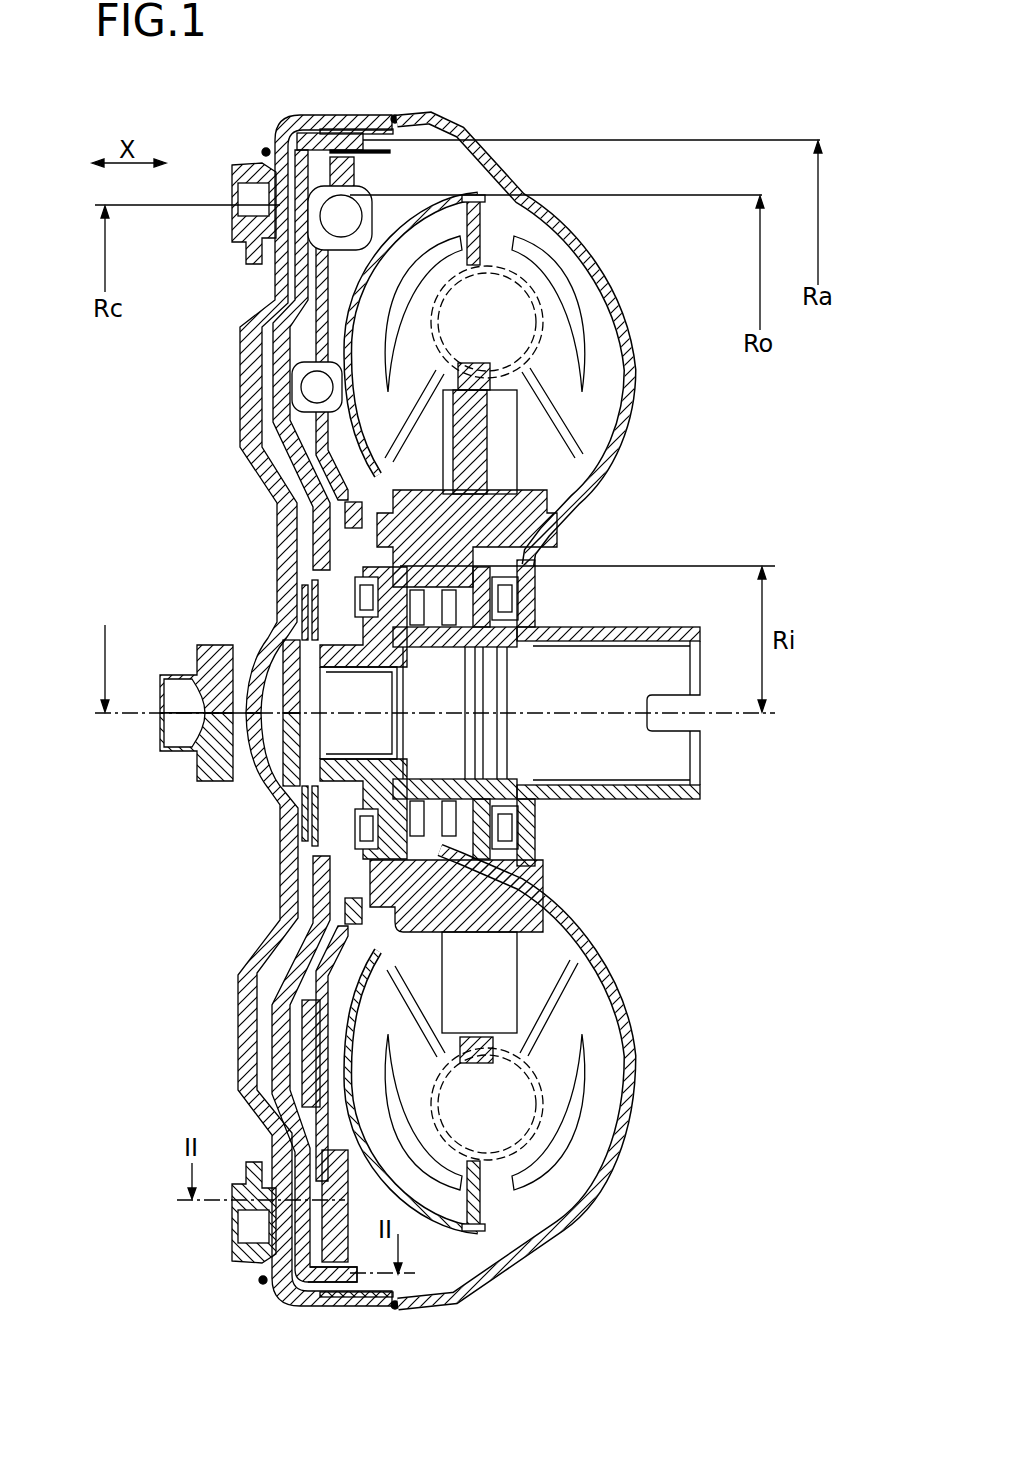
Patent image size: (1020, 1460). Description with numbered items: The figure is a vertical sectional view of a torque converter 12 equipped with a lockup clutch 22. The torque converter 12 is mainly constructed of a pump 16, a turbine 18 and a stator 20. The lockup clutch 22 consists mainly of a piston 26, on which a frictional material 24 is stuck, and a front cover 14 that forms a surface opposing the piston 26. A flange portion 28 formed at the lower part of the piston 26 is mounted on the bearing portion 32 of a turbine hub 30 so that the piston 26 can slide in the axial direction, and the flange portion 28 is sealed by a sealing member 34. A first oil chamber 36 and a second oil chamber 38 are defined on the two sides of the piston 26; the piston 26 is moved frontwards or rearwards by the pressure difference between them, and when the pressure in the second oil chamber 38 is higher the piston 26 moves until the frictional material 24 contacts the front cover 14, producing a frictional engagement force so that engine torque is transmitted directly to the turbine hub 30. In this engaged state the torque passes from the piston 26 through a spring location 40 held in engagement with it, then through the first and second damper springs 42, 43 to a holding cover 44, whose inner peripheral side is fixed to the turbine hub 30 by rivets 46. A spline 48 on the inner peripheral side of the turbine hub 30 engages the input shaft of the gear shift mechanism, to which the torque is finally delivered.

The torque converter 12 is at (430, 701).
The front cover 14 is at (236, 386).
The pump 16 is at (585, 264).
The turbine 18 is at (452, 198).
The stator 20 is at (507, 460).
The lockup clutch 22 is at (333, 701).
The frictional material 24 is at (274, 150).
The piston 26 is at (310, 146).
The flange portion 28 is at (328, 553).
The turbine hub 30 is at (288, 648).
The bearing portion 32 is at (312, 600).
The sealing member 34 is at (318, 578).
The first oil chamber 36 is at (300, 460).
The second oil chamber 38 is at (428, 138).
The spring location 40 is at (372, 205).
The first damper spring 42 is at (270, 230).
The second damper spring 43 is at (290, 350).
The holding cover 44 is at (396, 134).
The rivets 46 is at (340, 516).
The spline 48 is at (372, 674).